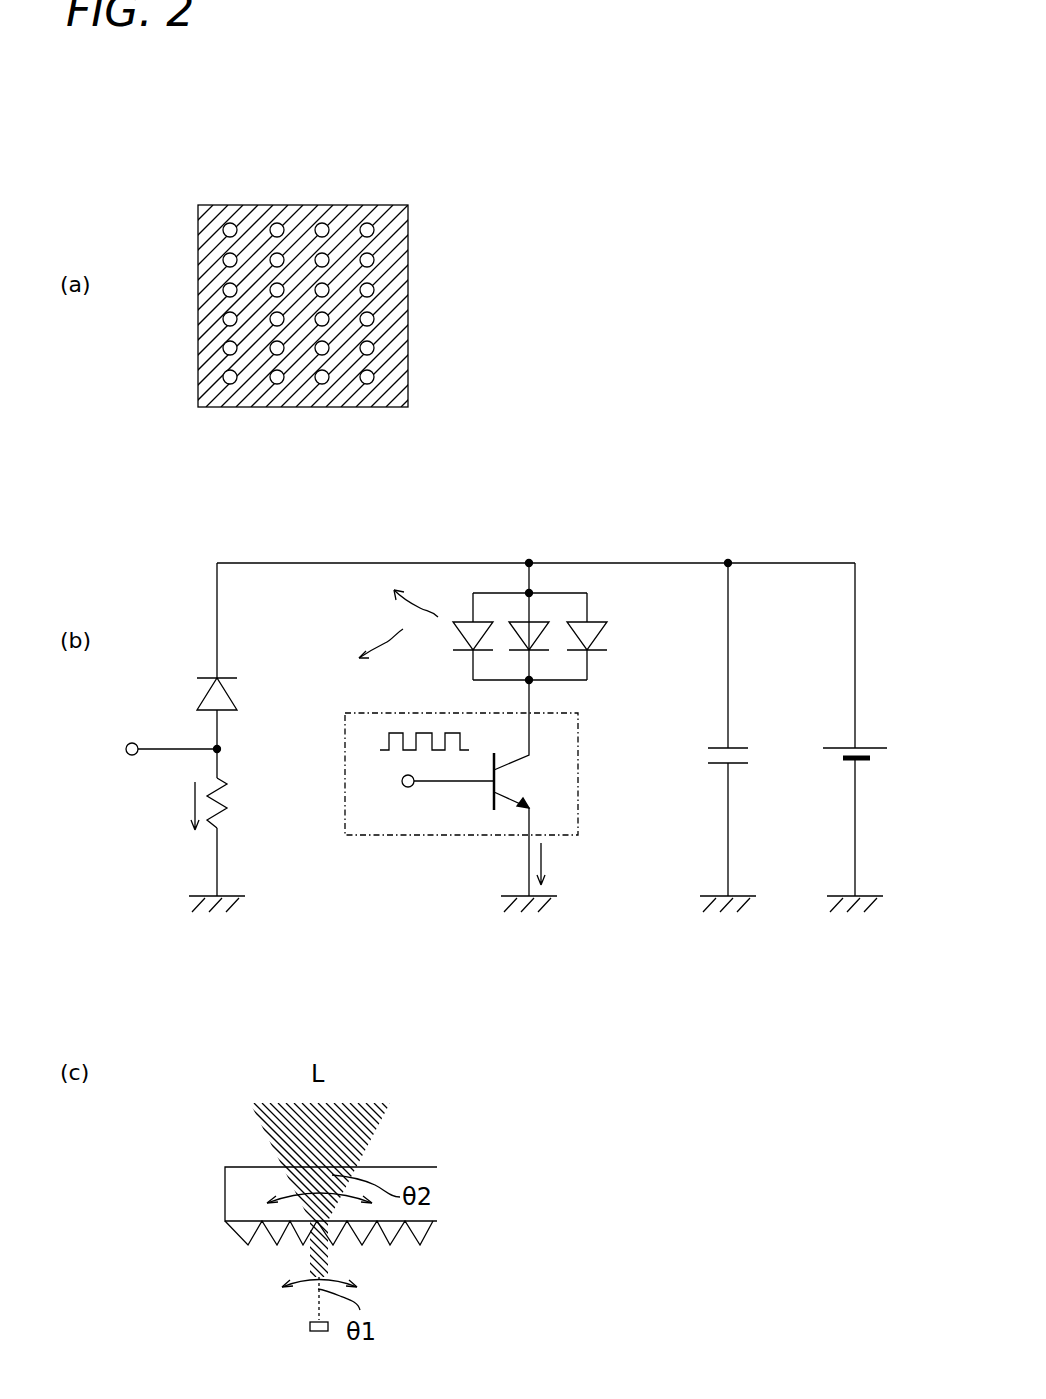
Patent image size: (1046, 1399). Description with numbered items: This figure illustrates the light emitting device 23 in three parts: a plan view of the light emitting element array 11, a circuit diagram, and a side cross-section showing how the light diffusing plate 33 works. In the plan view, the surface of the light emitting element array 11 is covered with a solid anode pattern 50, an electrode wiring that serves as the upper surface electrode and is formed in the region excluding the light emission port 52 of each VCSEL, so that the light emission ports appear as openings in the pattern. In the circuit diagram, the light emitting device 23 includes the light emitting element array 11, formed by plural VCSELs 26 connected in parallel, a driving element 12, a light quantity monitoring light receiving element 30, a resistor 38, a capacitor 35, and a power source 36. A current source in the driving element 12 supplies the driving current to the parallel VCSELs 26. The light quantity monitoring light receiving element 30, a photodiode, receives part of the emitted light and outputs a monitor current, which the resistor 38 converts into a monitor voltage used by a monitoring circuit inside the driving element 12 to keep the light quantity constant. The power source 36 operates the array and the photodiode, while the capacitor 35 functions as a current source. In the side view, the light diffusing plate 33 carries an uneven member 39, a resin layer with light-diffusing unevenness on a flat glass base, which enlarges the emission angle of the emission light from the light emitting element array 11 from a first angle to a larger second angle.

The light emitting element array 11 is at (345, 739).
The anode pattern 50 is at (385, 293).
The light emission port 52 is at (234, 383).
The light emitting device 23 is at (513, 699).
The light quantity monitoring light receiving element 30 is at (228, 690).
The resistor 38 is at (225, 820).
The VCSEL 26 is at (597, 630).
The driving element 12 is at (403, 837).
The capacitor 35 is at (736, 748).
The power source 36 is at (863, 748).
The light diffusing plate 33 is at (240, 1166).
The uneven member 39 is at (238, 1234).